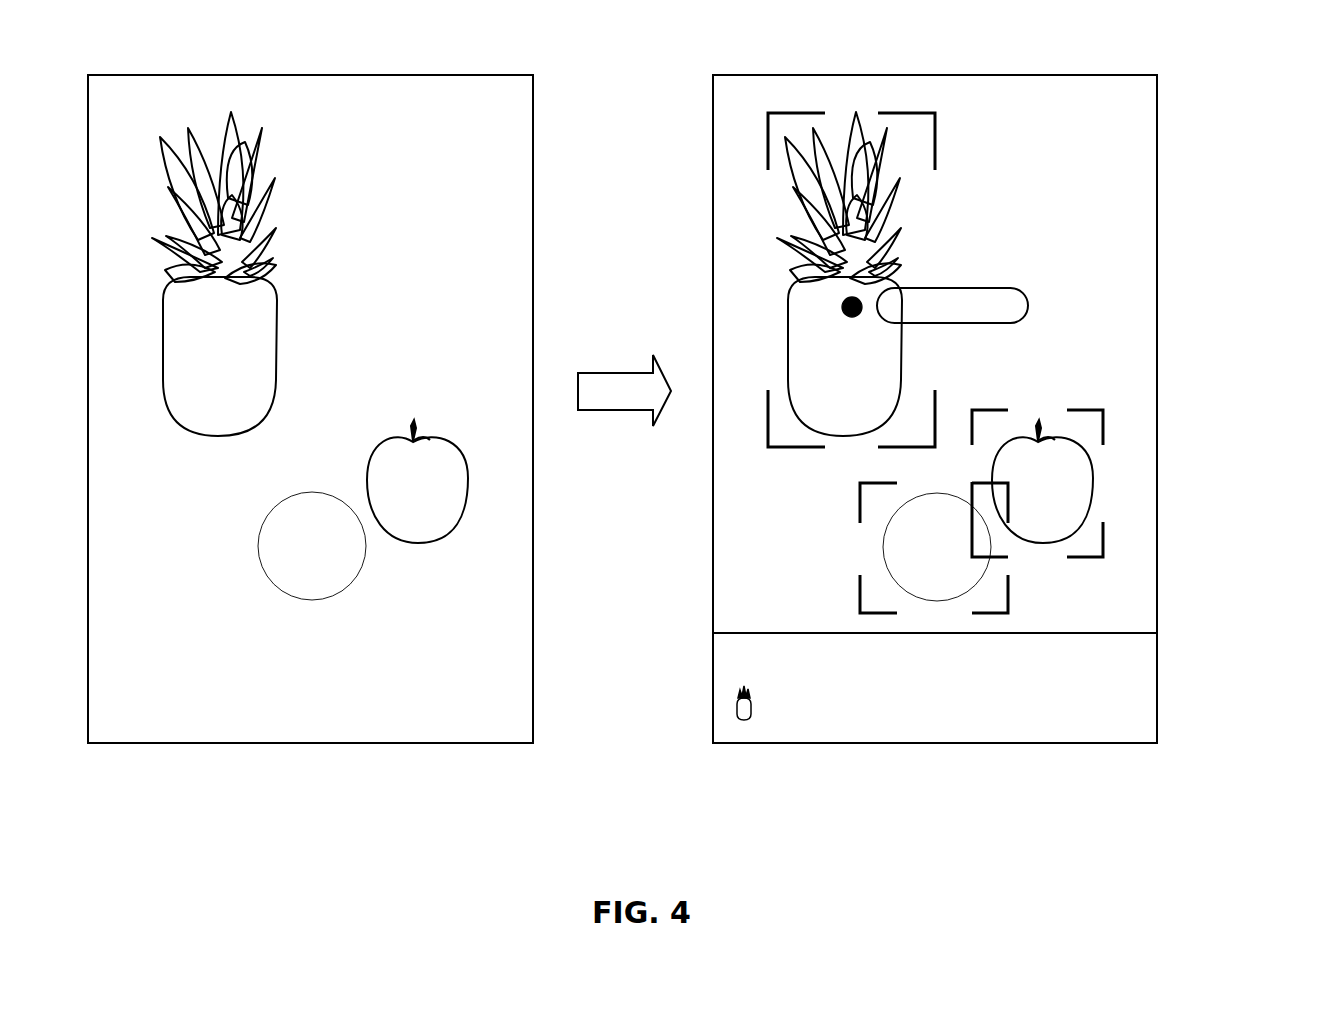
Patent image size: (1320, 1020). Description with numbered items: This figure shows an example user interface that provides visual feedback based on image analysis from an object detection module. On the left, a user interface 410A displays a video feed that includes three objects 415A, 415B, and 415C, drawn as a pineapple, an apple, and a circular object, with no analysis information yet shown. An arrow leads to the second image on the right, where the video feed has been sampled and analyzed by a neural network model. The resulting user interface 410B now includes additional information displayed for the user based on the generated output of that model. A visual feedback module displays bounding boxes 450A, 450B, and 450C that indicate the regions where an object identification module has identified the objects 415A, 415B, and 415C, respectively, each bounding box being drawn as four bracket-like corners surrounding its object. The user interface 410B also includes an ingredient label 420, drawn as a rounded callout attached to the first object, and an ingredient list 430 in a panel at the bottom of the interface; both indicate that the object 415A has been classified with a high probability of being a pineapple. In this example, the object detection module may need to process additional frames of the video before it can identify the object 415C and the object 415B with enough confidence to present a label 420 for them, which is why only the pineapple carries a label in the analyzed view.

The user interface 410A is at (385, 75).
The user interface 410B is at (1002, 75).
The object 415A is at (240, 399).
The object 415B is at (445, 516).
The object 415C is at (337, 557).
The ingredient label 420 is at (958, 280).
The ingredient list 430 is at (1178, 743).
The bounding box 450A is at (950, 145).
The bounding box 450B is at (1085, 405).
The bounding box 450C is at (1012, 596).